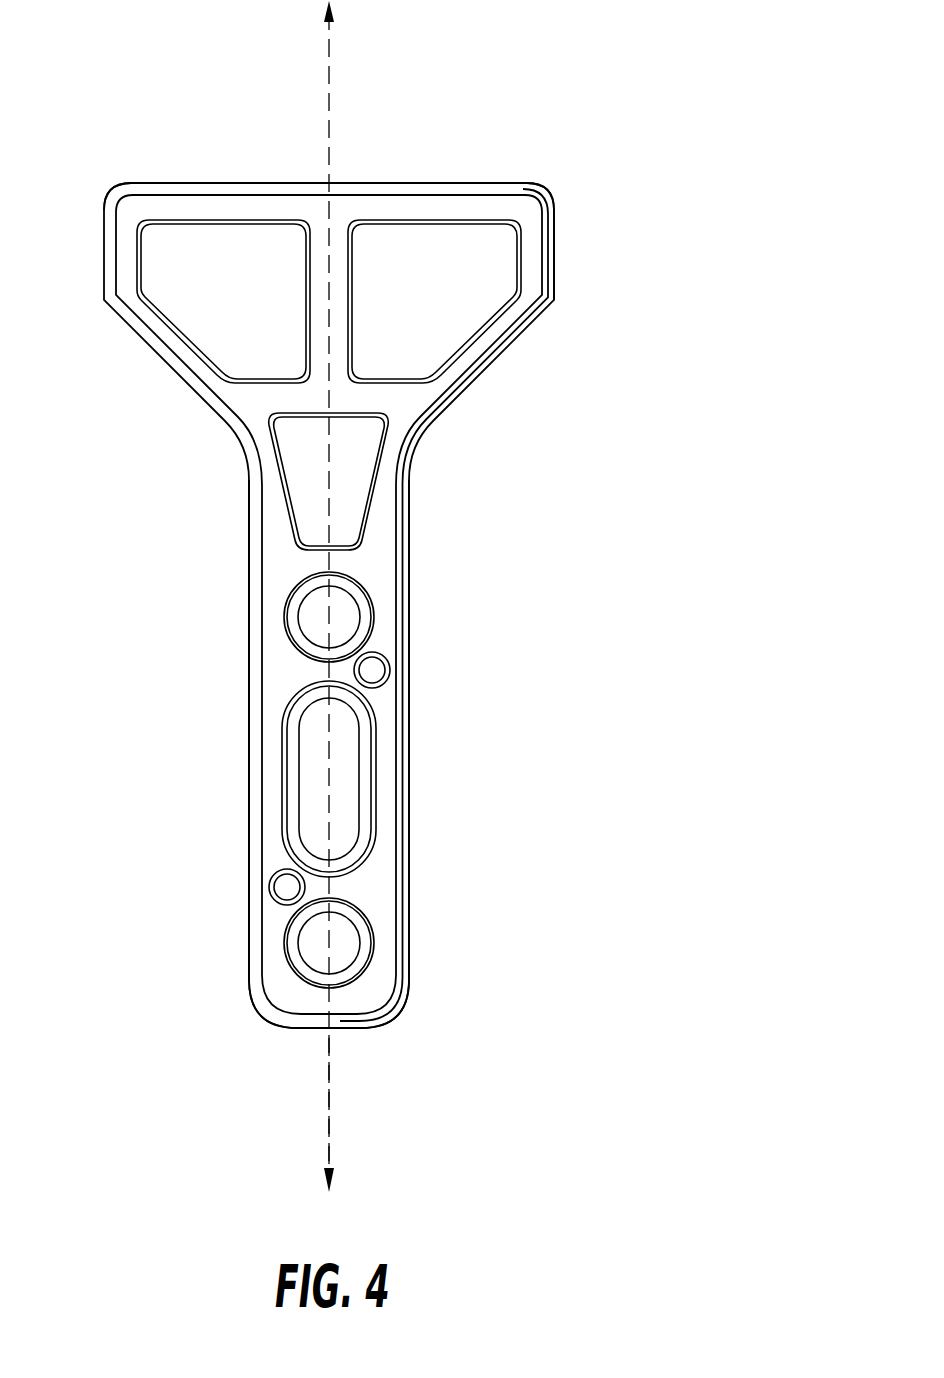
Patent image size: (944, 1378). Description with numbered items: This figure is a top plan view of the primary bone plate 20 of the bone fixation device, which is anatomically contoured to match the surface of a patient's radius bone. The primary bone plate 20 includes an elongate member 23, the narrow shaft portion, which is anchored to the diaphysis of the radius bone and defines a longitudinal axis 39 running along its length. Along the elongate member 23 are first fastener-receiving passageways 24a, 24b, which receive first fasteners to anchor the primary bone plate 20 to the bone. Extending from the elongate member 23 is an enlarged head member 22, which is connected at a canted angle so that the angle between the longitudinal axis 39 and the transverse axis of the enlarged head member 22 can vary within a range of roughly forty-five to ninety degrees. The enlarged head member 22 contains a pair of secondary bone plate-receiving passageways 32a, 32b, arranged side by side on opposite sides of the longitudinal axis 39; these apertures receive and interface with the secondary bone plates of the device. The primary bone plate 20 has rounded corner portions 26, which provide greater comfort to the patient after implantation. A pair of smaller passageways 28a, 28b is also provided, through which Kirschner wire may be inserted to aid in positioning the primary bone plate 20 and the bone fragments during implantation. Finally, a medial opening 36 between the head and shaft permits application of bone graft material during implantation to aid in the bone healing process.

The primary bone plate 20 is at (557, 118).
The enlarged head member 22 is at (331, 163).
The elongate member 23 is at (428, 779).
The first fastener-receiving passageway 24a is at (338, 620).
The first fastener-receiving passageway 24b is at (337, 772).
The rounded corner portions 26 is at (176, 183).
The passageway 28a is at (366, 669).
The passageway 28b is at (288, 887).
The secondary bone plate-receiving passageway 32a is at (212, 303).
The secondary bone plate-receiving passageway 32b is at (473, 282).
The medial opening 36 is at (363, 472).
The longitudinal axis 39 is at (330, 1071).